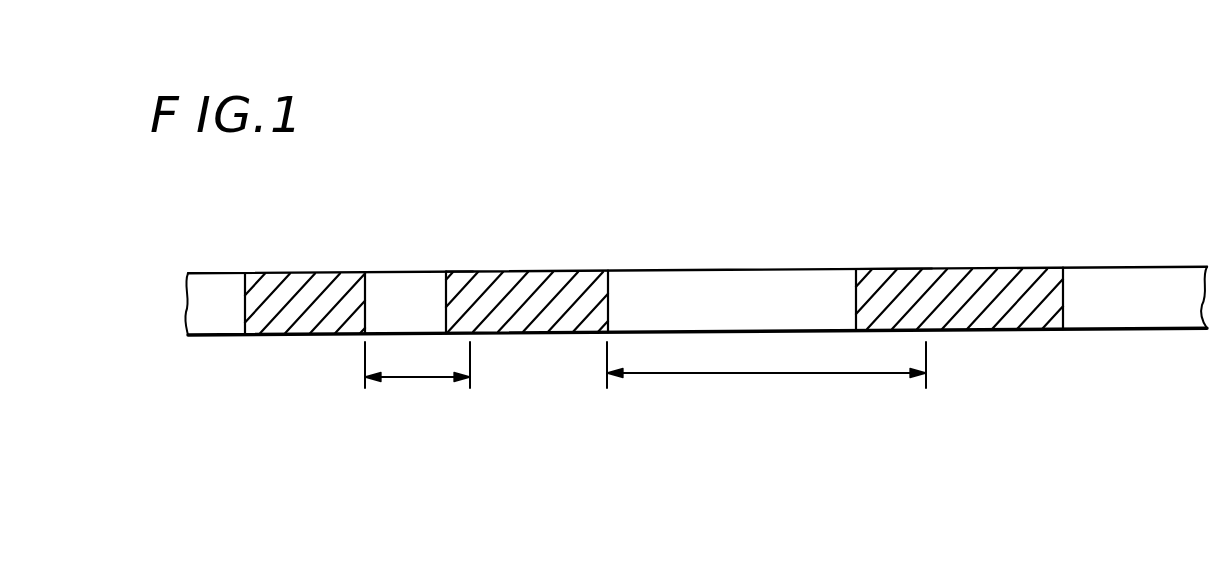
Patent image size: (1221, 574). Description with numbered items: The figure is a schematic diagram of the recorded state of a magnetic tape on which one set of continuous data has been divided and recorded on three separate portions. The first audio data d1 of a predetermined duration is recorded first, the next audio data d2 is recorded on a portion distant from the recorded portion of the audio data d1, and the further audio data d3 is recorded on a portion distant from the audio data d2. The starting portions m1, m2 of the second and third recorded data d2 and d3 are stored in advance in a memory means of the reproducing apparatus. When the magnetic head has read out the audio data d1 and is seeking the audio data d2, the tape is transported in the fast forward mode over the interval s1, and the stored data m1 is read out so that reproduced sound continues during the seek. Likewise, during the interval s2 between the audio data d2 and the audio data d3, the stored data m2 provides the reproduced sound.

The audio data d1 is at (277, 273).
The audio data d2 is at (494, 272).
The audio data d3 is at (962, 268).
The starting portion data m1 is at (473, 268).
The starting portion data m2 is at (932, 262).
The interval s1 is at (401, 378).
The interval s2 is at (717, 374).